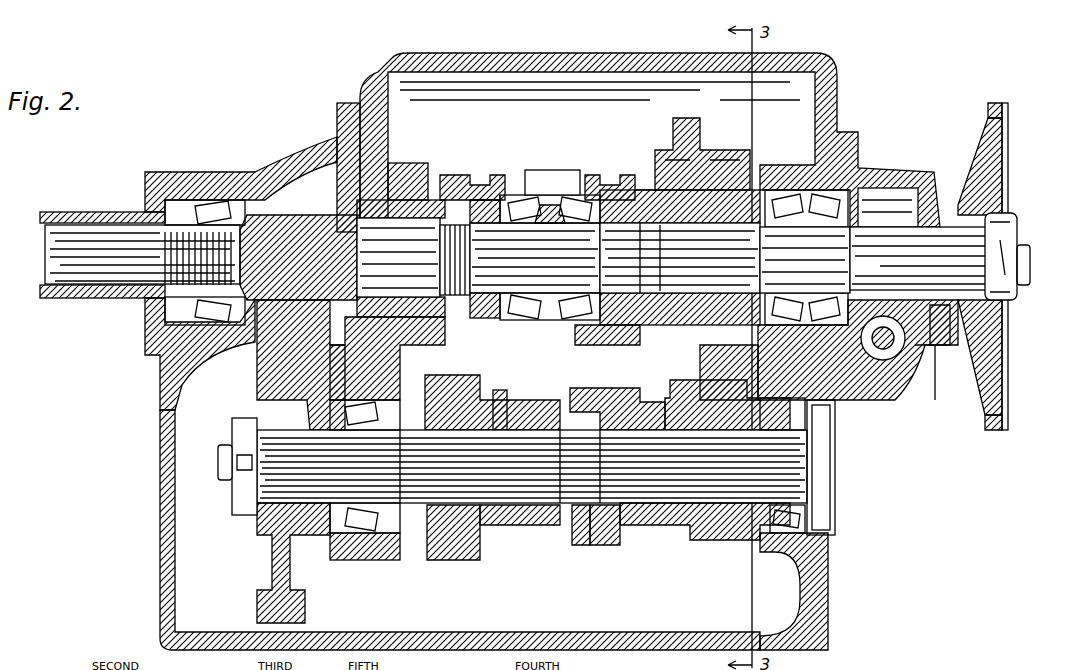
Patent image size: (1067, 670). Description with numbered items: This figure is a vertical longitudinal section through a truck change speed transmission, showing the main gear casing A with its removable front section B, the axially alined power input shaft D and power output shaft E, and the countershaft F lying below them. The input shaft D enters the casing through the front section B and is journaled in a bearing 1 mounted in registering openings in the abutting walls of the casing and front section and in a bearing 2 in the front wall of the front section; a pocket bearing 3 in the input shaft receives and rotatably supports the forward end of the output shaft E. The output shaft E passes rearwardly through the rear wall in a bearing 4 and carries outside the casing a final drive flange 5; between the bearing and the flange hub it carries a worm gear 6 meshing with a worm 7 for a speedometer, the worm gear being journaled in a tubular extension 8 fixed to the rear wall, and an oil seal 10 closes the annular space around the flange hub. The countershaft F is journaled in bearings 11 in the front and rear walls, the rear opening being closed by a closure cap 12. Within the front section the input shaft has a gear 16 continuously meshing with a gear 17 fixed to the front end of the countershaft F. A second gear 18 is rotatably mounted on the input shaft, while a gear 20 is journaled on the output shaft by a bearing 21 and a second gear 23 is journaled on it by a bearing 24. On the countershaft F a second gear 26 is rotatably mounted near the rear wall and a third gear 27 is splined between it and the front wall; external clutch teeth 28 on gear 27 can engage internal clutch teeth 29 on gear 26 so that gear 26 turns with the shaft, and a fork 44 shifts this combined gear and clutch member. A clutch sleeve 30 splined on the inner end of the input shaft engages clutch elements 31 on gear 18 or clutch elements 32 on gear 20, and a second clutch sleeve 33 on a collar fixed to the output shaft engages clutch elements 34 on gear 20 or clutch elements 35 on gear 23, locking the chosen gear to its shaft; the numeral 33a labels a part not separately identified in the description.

The main gear casing A is at (478, 55).
The removable front section B is at (205, 172).
The power input shaft D is at (95, 262).
The power output shaft E is at (930, 255).
The countershaft F is at (690, 505).
The bearing 1 is at (350, 104).
The bearing 2 is at (210, 325).
The pocket bearing 3 is at (390, 285).
The bearing 4 is at (822, 227).
The final drive flange 5 is at (1008, 140).
The worm gear 6 is at (882, 215).
The worm 7 is at (884, 360).
The tubular extension 8 is at (912, 350).
The oil seal 10 is at (930, 343).
The bearings 11 is at (372, 430).
The closure cap 12 is at (835, 505).
The gear 16 is at (282, 200).
The gear 17 is at (270, 556).
The second gear 18 is at (406, 163).
The gear 20 is at (545, 190).
The bearing 21 is at (568, 290).
The second gear 23 is at (686, 120).
The bearing 24 is at (722, 225).
The second gear 26 is at (718, 540).
The third gear 27 is at (460, 558).
The external clutch teeth 28 is at (540, 525).
The internal clutch teeth 29 is at (580, 545).
The clutch sleeve 30 is at (495, 200).
The clutch elements 31 is at (446, 195).
The clutch elements 32 is at (520, 215).
The second clutch sleeve 33 is at (628, 172).
The gear 33a is at (612, 335).
The clutch elements 34 is at (596, 193).
The clutch elements 35 is at (662, 330).
The fork 44 is at (502, 395).